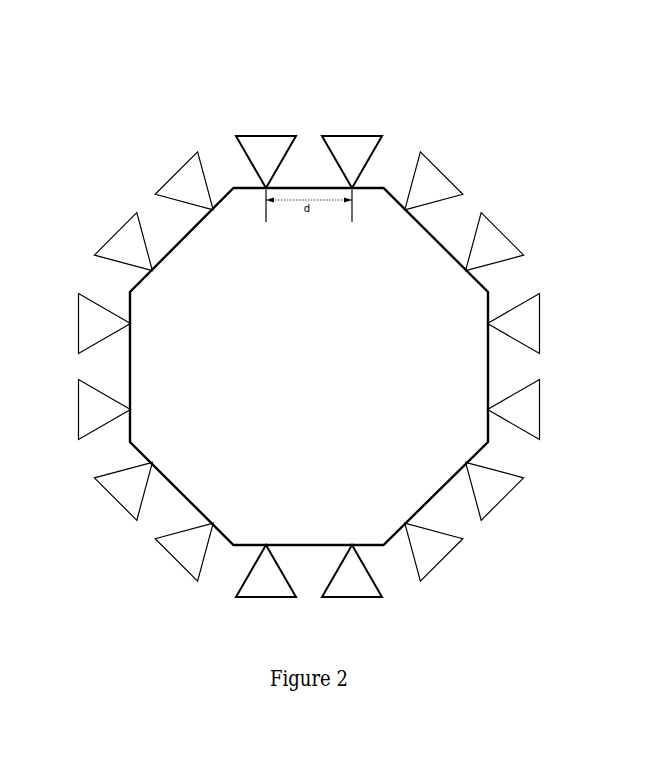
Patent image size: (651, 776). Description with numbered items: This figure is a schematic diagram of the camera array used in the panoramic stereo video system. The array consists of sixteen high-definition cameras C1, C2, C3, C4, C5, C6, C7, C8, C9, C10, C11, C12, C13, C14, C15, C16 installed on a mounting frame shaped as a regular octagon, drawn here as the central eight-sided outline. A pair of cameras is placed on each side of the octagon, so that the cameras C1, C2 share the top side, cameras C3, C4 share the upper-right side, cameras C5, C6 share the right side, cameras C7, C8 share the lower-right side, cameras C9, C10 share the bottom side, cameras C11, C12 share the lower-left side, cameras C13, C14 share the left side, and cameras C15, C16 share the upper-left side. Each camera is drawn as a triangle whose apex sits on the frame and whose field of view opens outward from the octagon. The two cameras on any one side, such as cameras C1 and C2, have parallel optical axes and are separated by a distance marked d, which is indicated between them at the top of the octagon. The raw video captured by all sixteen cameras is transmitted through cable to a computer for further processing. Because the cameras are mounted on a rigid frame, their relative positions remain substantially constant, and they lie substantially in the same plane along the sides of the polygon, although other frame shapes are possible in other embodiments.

The high-definition camera C1 is at (266, 152).
The high-definition camera C2 is at (352, 152).
The high-definition camera C3 is at (435, 181).
The high-definition camera C4 is at (499, 242).
The high-definition camera C5 is at (531, 324).
The high-definition camera C6 is at (531, 410).
The high-definition camera C7 is at (499, 493).
The high-definition camera C8 is at (438, 553).
The high-definition camera C9 is at (352, 580).
The high-definition camera C10 is at (266, 580).
The high-definition camera C11 is at (179, 552).
The high-definition camera C12 is at (115, 492).
The high-definition camera C13 is at (87, 410).
The high-definition camera C14 is at (87, 324).
The high-definition camera C15 is at (115, 242).
The high-definition camera C16 is at (175, 181).